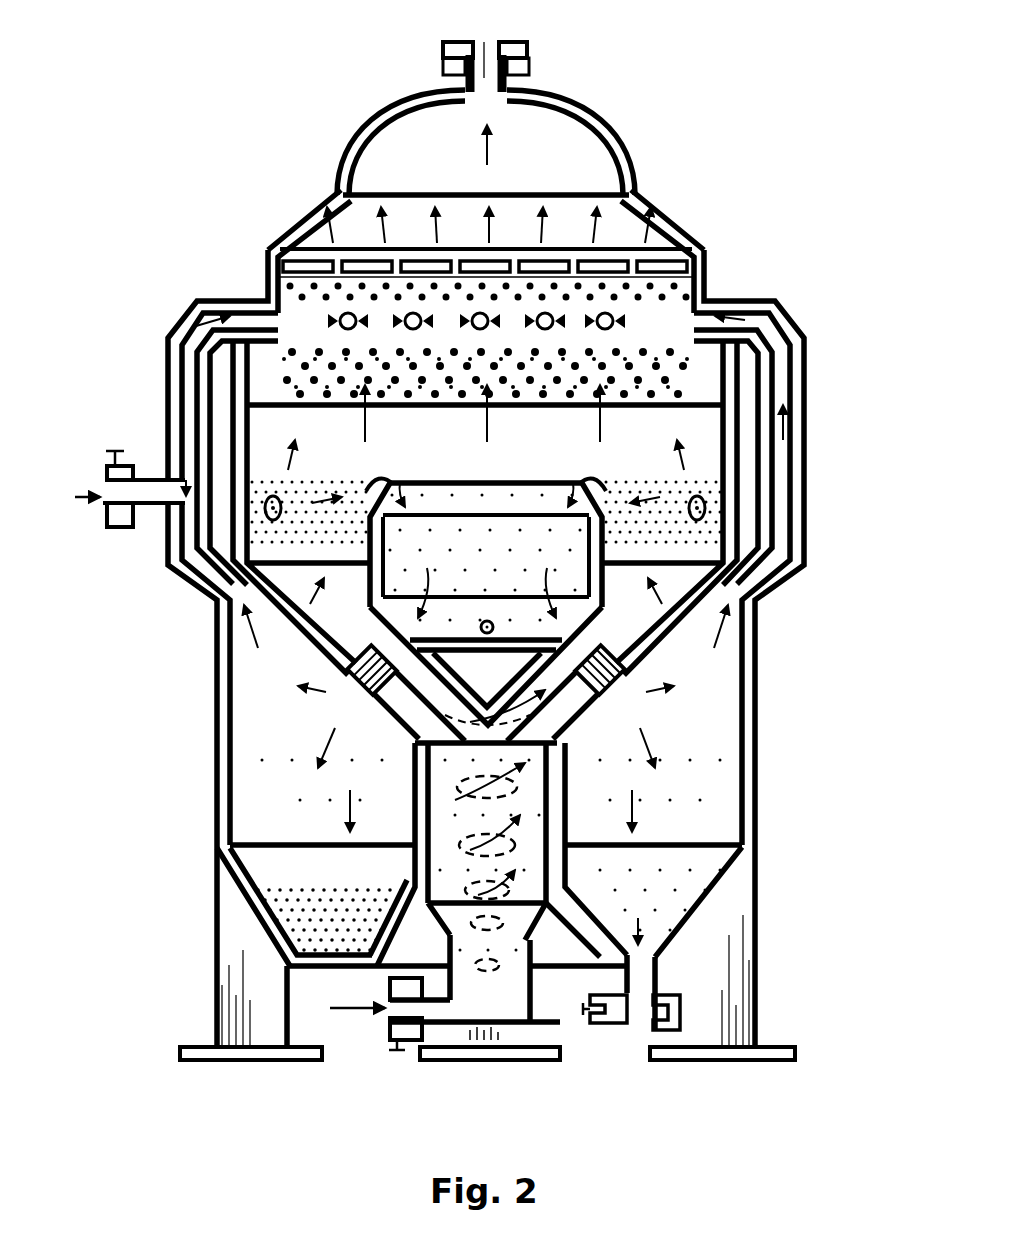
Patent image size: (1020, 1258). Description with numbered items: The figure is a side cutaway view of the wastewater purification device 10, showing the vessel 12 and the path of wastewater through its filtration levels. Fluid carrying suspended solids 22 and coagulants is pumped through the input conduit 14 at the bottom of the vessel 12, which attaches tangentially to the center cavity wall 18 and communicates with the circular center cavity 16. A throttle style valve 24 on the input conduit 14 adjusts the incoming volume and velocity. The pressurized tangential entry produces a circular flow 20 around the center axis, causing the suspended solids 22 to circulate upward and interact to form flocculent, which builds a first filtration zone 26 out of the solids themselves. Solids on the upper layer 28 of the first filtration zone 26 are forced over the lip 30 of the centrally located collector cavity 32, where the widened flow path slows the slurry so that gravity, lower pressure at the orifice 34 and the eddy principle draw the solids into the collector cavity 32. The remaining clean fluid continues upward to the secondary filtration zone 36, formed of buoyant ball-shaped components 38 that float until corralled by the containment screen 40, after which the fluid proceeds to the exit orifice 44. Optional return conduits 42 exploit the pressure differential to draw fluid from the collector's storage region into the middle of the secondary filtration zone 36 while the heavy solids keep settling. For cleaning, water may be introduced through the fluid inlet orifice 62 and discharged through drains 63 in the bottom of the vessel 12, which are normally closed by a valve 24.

The wastewater purification device 10 is at (815, 937).
The vessel 12 is at (757, 752).
The input conduit 14 is at (410, 1007).
The center cavity 16 is at (543, 858).
The center cavity wall 18 is at (430, 935).
The circular flow 20 is at (528, 1000).
The suspended solids 22 is at (316, 795).
The throttle style valve 24 is at (458, 45).
The first filtration zone 26 is at (248, 598).
The upper layer 28 is at (287, 497).
The lip 30 is at (577, 483).
The collector cavity 32 is at (508, 555).
The orifice 34 is at (447, 485).
The secondary filtration zone 36 is at (640, 358).
The buoyant ball-shaped components 38 is at (290, 345).
The containment screen 40 is at (603, 306).
The return conduit 42 is at (193, 322).
The exit orifice 44 is at (505, 37).
The fluid inlet orifice 62 is at (105, 490).
The drain 63 is at (658, 1022).